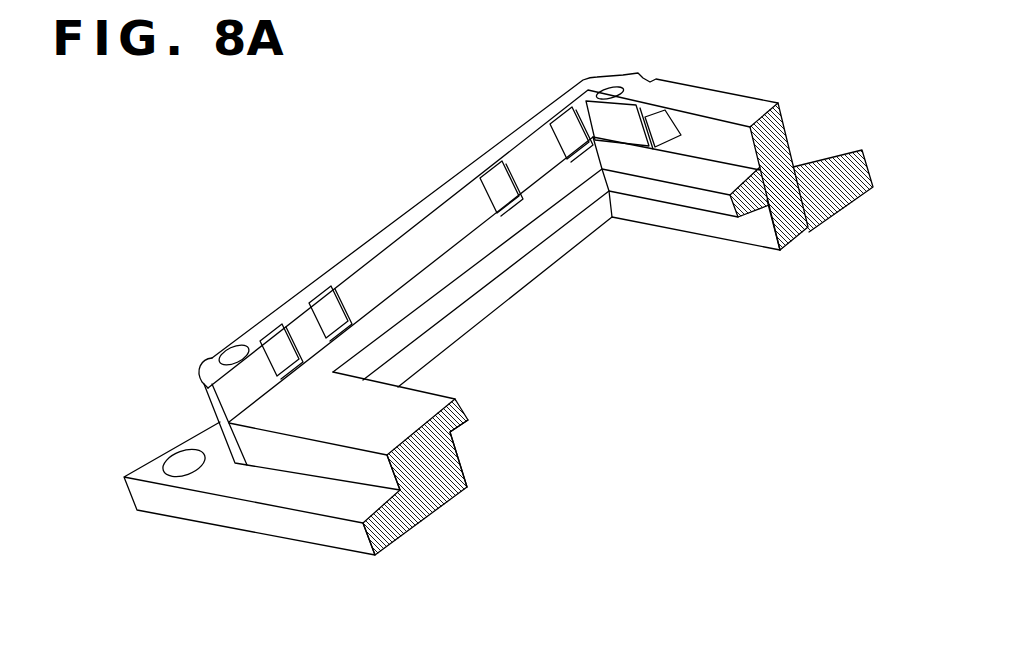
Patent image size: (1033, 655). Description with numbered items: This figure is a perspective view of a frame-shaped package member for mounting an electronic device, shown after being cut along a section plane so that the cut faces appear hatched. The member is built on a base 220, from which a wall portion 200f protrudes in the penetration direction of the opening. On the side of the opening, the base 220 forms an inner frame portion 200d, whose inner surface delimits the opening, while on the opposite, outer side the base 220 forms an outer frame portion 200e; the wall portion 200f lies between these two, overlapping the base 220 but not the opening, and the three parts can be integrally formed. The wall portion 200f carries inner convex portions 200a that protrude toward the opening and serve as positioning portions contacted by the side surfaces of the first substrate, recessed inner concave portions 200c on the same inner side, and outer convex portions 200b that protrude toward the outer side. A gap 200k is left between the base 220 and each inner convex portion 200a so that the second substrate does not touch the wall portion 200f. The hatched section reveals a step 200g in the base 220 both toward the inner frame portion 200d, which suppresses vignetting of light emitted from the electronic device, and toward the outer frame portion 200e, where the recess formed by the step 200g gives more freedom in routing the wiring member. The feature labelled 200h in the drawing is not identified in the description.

The base 220 is at (343, 413).
The inner convex portion 200a is at (647, 110).
The outer convex portion 200b is at (638, 73).
The inner concave portion 200c is at (480, 176).
The inner frame portion 200d is at (747, 190).
The outer frame portion 200e is at (400, 523).
The wall portion 200f is at (427, 243).
The step 200g is at (464, 450).
The tab portion 200h is at (266, 451).
The gap 200k is at (670, 153).